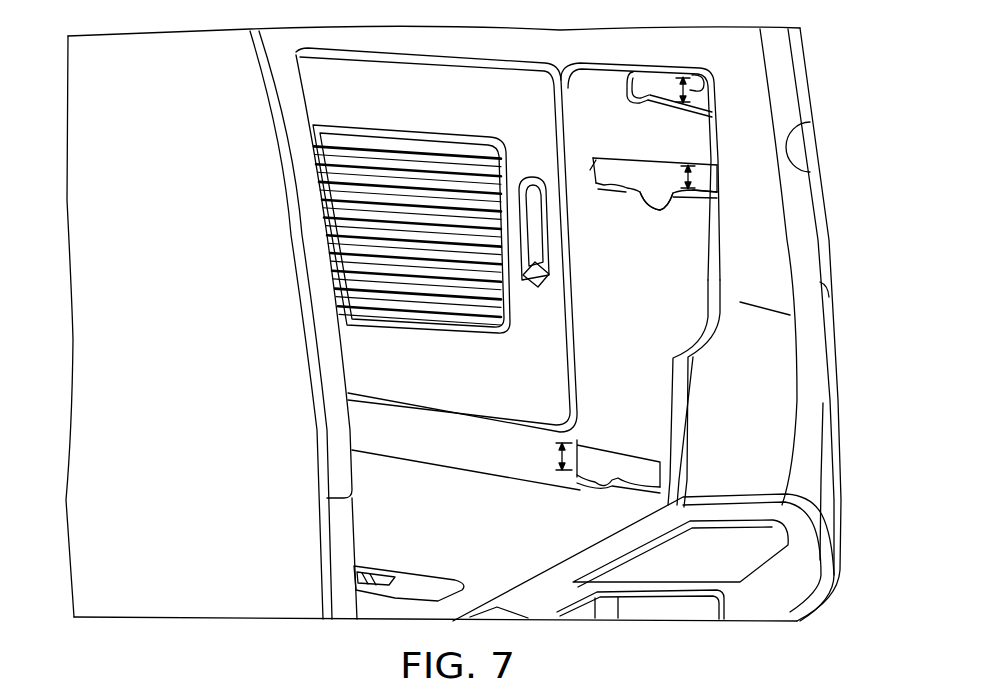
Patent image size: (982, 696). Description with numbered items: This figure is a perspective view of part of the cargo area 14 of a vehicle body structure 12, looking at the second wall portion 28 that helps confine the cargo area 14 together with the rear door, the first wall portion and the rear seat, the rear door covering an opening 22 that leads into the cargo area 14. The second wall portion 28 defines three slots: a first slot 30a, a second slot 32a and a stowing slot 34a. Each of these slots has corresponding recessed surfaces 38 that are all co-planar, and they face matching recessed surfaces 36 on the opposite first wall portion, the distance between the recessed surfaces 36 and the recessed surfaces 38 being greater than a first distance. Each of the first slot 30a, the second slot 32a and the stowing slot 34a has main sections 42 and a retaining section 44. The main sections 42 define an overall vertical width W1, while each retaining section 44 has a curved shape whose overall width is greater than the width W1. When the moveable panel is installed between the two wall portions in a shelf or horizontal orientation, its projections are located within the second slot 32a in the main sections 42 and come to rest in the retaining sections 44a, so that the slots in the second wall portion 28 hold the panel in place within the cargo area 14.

The vehicle body structure 12 is at (822, 92).
The cargo area 14 is at (405, 512).
The opening 22 is at (810, 170).
The second wall portion 28 is at (583, 93).
The first slot 30a is at (645, 74).
The second slot 32a is at (624, 195).
The stowing slot 34a is at (598, 467).
The recessed surfaces 36 is at (628, 96).
The recessed surfaces 38 is at (638, 190).
The main sections 42 is at (593, 156).
The retaining section 44 is at (708, 96).
The retaining sections 44a is at (590, 172).
The vertical width W1 is at (527, 488).